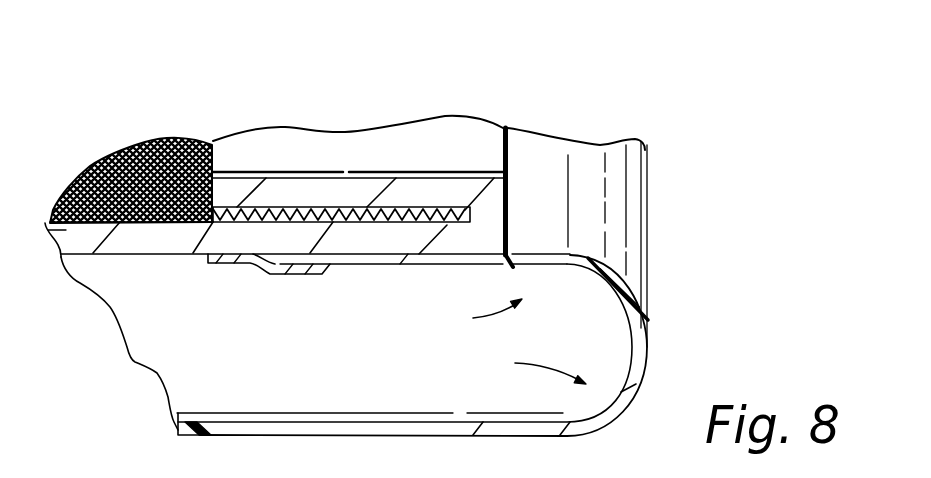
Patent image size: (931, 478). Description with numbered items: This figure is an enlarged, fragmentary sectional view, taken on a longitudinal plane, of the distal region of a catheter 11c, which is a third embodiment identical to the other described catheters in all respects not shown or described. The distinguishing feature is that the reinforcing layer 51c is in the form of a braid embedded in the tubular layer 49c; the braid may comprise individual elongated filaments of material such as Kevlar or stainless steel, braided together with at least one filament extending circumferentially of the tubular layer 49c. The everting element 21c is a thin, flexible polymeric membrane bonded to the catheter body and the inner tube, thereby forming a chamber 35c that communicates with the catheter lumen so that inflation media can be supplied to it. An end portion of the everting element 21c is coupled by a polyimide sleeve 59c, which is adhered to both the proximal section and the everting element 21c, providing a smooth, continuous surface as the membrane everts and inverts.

The catheter 11c is at (328, 101).
The reinforcing layer 51c is at (168, 135).
The tubular layer 49c is at (45, 223).
The chamber 35c is at (193, 372).
The sleeve 59c is at (247, 267).
The everting element 21c is at (180, 427).